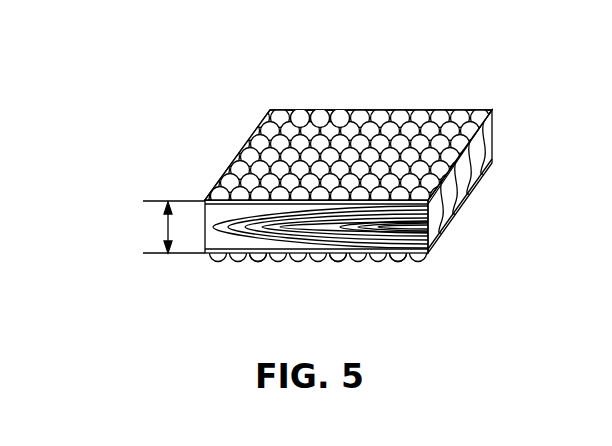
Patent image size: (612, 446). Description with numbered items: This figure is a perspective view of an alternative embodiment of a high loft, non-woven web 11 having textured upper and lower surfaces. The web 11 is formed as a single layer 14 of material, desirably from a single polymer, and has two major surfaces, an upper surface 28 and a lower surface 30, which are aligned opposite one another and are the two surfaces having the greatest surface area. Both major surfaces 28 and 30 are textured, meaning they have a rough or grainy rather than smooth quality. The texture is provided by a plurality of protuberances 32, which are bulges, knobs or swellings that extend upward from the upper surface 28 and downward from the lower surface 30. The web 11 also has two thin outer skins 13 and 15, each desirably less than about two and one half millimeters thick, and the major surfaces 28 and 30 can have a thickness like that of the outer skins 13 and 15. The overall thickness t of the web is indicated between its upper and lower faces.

The high loft, non-woven web 11 is at (348, 171).
The thin outer skin 13 is at (205, 201).
The single layer 14 is at (497, 140).
The thin outer skin 15 is at (205, 253).
The upper surface 28 is at (431, 110).
The lower surface 30 is at (410, 262).
The protuberances 32 is at (318, 140).